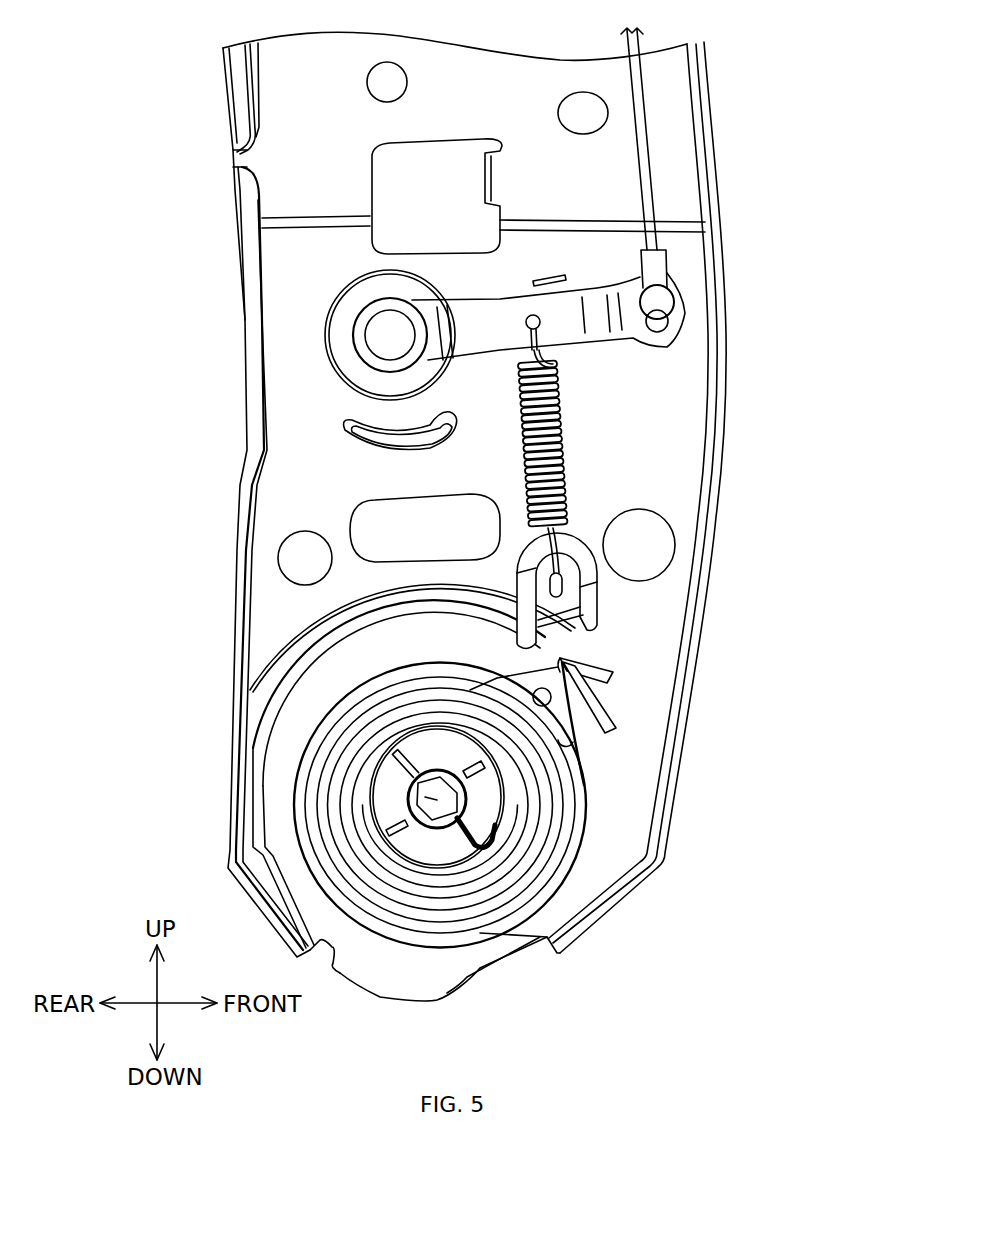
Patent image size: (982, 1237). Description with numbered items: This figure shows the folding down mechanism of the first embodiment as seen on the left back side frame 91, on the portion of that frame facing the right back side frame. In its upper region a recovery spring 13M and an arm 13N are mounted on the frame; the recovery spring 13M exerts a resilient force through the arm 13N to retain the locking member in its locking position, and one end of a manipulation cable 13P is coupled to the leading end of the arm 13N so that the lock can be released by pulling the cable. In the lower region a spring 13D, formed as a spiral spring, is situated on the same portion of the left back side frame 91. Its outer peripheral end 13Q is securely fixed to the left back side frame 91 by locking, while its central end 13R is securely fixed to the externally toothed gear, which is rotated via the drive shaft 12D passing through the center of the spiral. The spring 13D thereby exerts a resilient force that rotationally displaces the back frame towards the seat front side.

The left back side frame 91 is at (730, 327).
The manipulation cable 13P is at (640, 97).
The arm 13N is at (597, 290).
The recovery spring 13M is at (567, 443).
The outer peripheral end 13Q is at (560, 663).
The spring 13D is at (590, 797).
The drive shaft 12D is at (415, 789).
The central end 13R is at (472, 832).